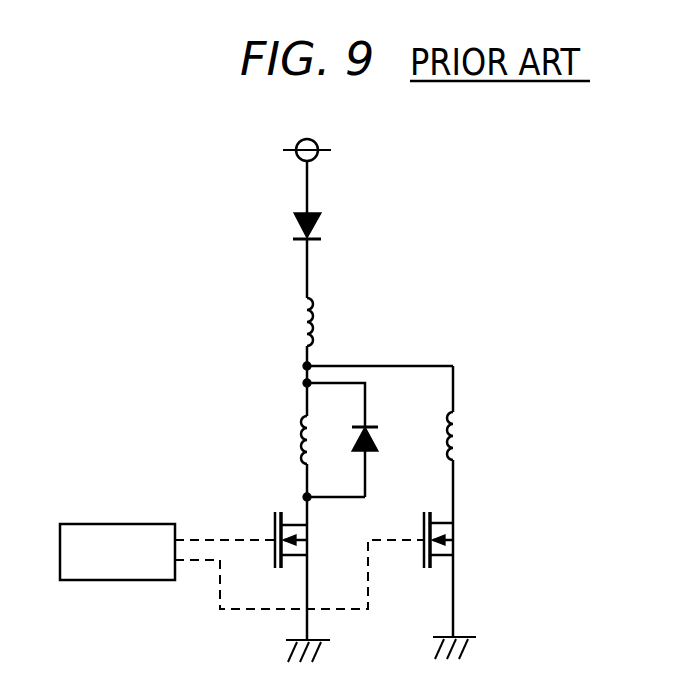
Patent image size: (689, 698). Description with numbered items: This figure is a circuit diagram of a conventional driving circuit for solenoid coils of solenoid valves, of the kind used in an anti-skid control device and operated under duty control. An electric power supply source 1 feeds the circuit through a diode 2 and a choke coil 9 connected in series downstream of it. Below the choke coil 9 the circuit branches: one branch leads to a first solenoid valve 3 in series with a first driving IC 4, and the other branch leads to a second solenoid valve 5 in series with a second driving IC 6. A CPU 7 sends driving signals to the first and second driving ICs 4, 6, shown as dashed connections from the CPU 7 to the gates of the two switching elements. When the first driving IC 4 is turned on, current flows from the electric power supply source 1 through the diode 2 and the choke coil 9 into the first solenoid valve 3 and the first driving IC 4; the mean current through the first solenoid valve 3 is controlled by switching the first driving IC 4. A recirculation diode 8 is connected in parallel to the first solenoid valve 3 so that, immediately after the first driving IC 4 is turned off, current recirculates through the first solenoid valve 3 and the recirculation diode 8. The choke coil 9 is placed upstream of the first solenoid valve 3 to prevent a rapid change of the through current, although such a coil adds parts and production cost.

The electric power supply source 1 is at (318, 145).
The diode 2 is at (318, 235).
The choke coil 9 is at (314, 322).
The first solenoid valve 3 is at (300, 418).
The recirculation diode 8 is at (372, 445).
The second solenoid valve 5 is at (458, 432).
The first driving IC 4 is at (275, 520).
The second driving IC 6 is at (456, 540).
The CPU 7 is at (113, 581).